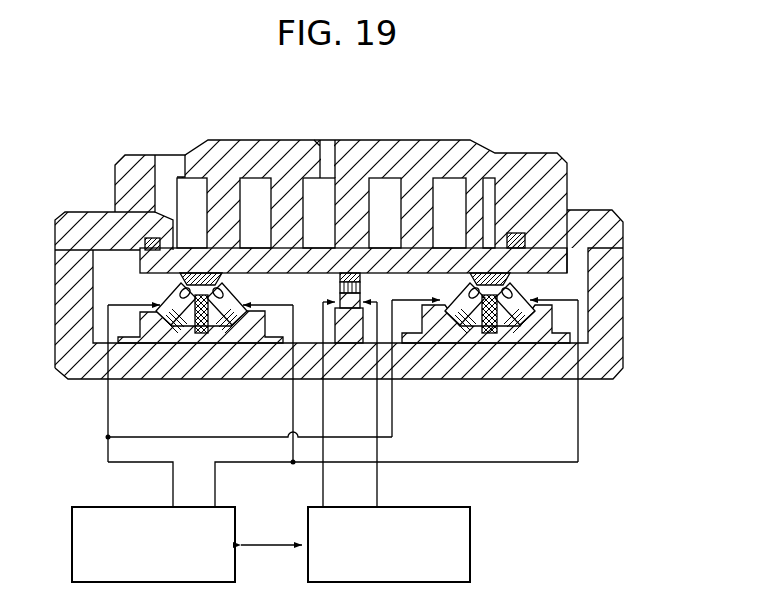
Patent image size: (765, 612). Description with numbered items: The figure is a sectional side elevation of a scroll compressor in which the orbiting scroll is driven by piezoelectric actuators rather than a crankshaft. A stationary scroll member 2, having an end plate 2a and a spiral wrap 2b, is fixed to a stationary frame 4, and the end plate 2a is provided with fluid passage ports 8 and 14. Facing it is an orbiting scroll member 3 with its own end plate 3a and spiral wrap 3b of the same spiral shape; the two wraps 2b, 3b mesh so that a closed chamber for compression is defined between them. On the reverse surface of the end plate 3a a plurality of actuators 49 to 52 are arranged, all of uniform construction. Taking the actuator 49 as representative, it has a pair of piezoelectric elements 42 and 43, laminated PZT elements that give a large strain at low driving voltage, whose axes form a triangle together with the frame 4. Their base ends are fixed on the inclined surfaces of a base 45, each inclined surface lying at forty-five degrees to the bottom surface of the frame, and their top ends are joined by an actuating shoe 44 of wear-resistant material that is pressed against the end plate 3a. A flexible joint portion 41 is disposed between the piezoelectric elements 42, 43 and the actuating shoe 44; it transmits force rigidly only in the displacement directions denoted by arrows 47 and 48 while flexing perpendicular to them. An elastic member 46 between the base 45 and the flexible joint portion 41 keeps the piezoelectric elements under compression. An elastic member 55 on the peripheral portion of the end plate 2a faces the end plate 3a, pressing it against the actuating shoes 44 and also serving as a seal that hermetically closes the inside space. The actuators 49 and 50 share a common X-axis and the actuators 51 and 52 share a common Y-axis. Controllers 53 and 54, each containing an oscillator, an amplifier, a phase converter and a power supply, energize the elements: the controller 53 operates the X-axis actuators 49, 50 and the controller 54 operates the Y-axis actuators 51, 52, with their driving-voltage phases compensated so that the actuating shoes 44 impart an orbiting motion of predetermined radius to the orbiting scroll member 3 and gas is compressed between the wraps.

The stationary scroll member 2 is at (300, 105).
The end plate 2a is at (272, 157).
The spiral wrap 2b is at (232, 190).
The orbiting scroll member 3 is at (445, 105).
The end plate 3a is at (383, 258).
The spiral wrap 3b is at (347, 185).
The stationary frame 4 is at (62, 273).
The fluid passage port 8 is at (172, 165).
The fluid passage port 14 is at (328, 157).
The flexible joint portion 41 is at (478, 287).
The piezoelectric element 42 is at (533, 297).
The piezoelectric element 43 is at (462, 326).
The actuating shoe 44 is at (567, 258).
The base 45 is at (542, 340).
The elastic member 46 is at (488, 333).
The arrow 47 is at (514, 322).
The arrow 48 is at (435, 298).
The actuator 49 is at (663, 173).
The actuator 50 is at (210, 290).
The actuator 51 is at (345, 312).
The actuator 52 is at (342, 403).
The controller 53 is at (75, 507).
The controller 54 is at (480, 518).
The elastic member 55 is at (517, 236).